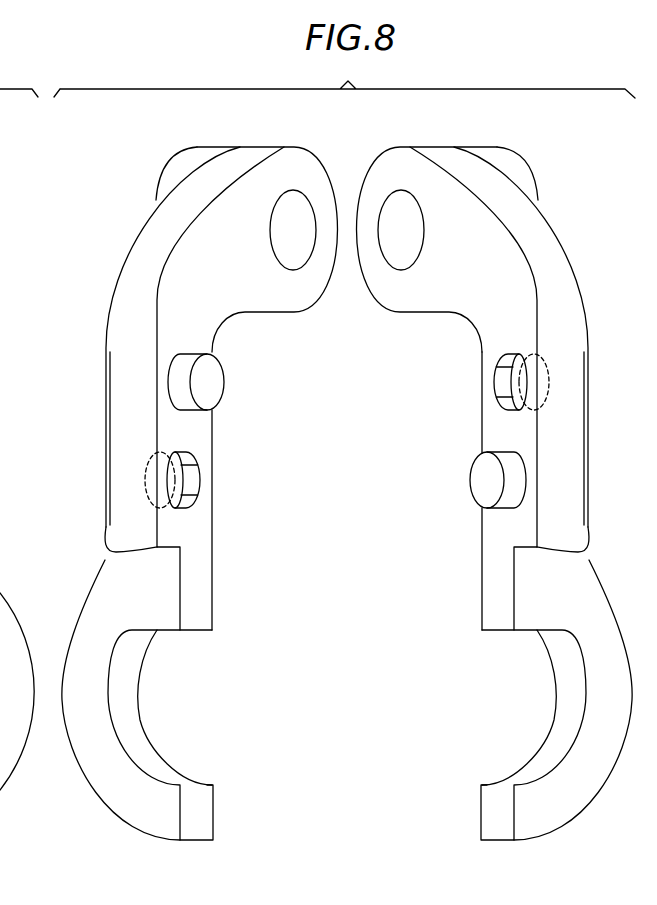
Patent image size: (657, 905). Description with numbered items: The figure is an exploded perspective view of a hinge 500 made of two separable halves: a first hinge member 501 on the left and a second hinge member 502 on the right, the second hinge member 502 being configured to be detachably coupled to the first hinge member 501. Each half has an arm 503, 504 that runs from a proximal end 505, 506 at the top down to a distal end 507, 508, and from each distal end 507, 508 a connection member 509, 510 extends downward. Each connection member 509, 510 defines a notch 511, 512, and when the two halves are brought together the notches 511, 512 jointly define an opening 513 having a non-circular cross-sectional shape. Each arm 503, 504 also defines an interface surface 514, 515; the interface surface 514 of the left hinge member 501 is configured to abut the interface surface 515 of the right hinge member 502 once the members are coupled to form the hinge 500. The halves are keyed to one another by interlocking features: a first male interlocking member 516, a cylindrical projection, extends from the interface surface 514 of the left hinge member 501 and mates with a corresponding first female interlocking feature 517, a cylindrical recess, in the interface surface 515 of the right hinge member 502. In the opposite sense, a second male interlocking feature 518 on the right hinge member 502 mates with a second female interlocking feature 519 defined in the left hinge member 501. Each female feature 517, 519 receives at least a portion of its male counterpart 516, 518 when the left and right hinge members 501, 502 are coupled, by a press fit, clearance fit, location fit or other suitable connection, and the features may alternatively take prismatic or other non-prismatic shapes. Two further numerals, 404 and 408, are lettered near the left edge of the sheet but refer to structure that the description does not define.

The hinge 500 is at (350, 88).
The first hinge member 501 is at (200, 475).
The second hinge member 502 is at (495, 479).
The arm 503 is at (167, 328).
The arm 504 is at (557, 297).
The proximal end 505 is at (247, 153).
The proximal end 506 is at (455, 155).
The distal end 507 is at (122, 567).
The distal end 508 is at (557, 585).
The connection member 509 is at (88, 655).
The connection member 510 is at (583, 632).
The notch 511 is at (165, 700).
The notch 512 is at (505, 700).
The opening 513 is at (310, 797).
The interface surface 514 is at (267, 292).
The interface surface 515 is at (469, 292).
The first male interlocking member 516 is at (203, 383).
The first female interlocking feature 517 is at (507, 382).
The second male interlocking feature 518 is at (490, 479).
The second female interlocking feature 519 is at (185, 480).
The housing element 404 is at (0, 257).
The ring element 408 is at (0, 585).